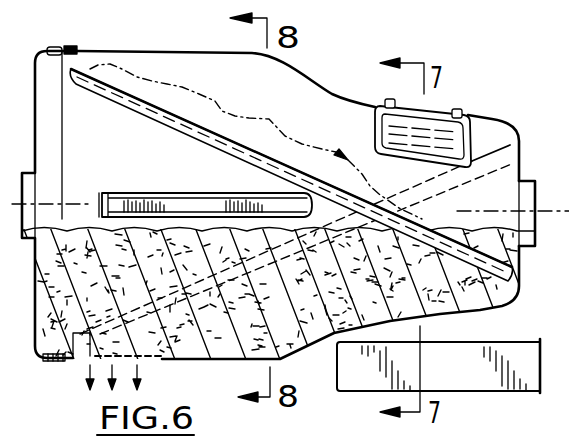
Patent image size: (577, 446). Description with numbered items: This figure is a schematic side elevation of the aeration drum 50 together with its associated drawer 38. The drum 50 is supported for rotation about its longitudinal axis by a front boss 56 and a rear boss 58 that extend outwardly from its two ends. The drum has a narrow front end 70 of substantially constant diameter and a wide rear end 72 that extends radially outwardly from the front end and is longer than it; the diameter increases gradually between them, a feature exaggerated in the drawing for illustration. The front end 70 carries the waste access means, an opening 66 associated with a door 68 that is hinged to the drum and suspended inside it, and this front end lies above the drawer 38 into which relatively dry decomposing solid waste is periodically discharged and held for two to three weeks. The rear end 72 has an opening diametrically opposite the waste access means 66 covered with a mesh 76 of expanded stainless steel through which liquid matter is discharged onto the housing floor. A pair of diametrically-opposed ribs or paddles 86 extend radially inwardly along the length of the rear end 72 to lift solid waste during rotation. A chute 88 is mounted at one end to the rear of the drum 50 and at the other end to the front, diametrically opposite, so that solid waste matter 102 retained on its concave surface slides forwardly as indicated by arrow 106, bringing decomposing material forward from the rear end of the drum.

The drawer 38 is at (520, 356).
The aeration drum 50 is at (328, 61).
The front boss 56 is at (535, 187).
The rear boss 58 is at (20, 181).
The opening 66 is at (422, 114).
The door 68 is at (433, 123).
The front end 70 is at (487, 112).
The rear end 72 is at (156, 30).
The mesh 76 is at (83, 360).
The ribs or paddles 86 is at (120, 200).
The chute 88 is at (217, 115).
The solid waste matter 102 is at (188, 247).
The arrow 106 is at (303, 138).